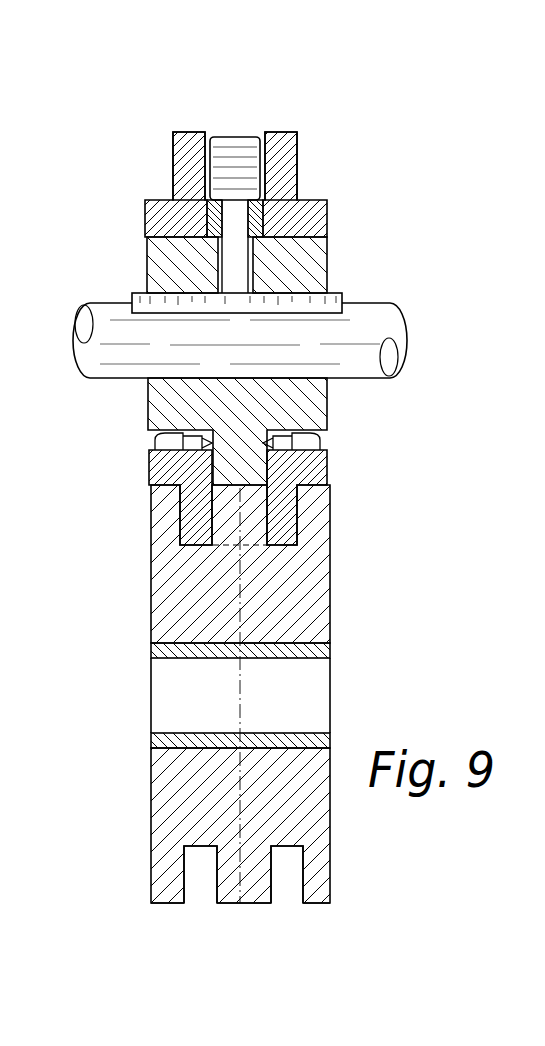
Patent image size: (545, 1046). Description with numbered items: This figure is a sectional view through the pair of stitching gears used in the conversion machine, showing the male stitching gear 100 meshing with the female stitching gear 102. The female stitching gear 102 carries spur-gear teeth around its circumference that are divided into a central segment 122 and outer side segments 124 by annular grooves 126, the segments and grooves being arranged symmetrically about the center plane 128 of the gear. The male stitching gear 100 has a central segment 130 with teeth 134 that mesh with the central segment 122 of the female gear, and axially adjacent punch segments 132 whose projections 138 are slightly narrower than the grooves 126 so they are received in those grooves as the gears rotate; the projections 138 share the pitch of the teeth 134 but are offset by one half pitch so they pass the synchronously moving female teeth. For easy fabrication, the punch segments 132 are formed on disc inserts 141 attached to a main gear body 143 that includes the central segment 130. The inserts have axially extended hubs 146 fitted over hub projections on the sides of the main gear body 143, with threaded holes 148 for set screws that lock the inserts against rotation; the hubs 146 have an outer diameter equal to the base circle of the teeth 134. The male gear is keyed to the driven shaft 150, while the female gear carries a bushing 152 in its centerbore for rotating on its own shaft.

The male stitching gear 100 is at (368, 250).
The female stitching gear 102 is at (341, 598).
The central segment 122 is at (247, 908).
The side segments 124 is at (169, 907).
The annular grooves 126 is at (200, 867).
The center plane 128 is at (243, 697).
The central segment 130 is at (244, 124).
The punch segments 132 is at (181, 128).
The teeth 134 is at (240, 162).
The projections 138 is at (192, 170).
The disc inserts 141 is at (141, 217).
The main gear body 143 is at (144, 398).
The hubs 146 is at (308, 492).
The threaded holes 148 is at (152, 443).
The driven shaft 150 is at (109, 302).
The bushing 152 is at (190, 648).